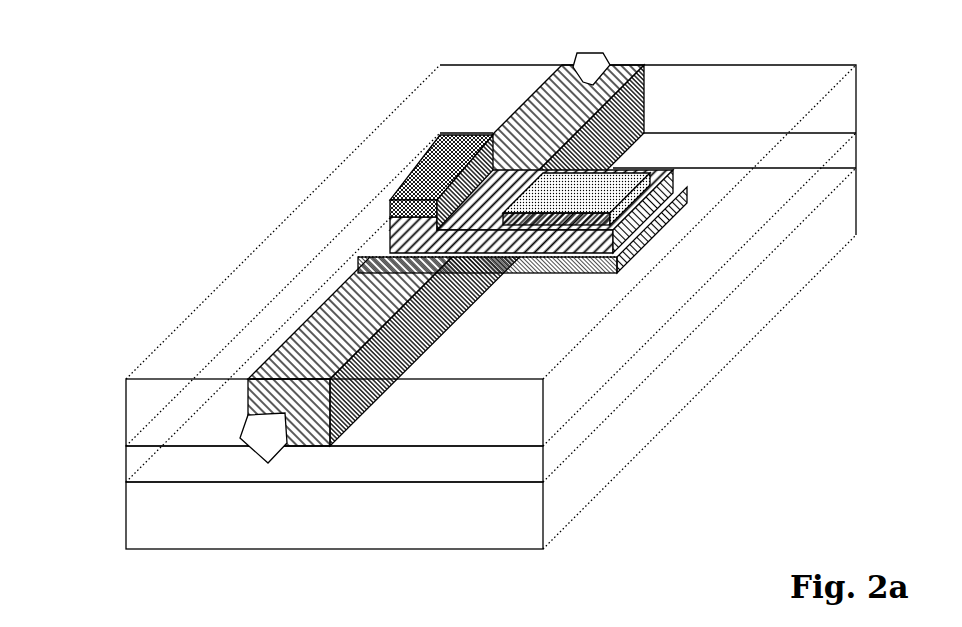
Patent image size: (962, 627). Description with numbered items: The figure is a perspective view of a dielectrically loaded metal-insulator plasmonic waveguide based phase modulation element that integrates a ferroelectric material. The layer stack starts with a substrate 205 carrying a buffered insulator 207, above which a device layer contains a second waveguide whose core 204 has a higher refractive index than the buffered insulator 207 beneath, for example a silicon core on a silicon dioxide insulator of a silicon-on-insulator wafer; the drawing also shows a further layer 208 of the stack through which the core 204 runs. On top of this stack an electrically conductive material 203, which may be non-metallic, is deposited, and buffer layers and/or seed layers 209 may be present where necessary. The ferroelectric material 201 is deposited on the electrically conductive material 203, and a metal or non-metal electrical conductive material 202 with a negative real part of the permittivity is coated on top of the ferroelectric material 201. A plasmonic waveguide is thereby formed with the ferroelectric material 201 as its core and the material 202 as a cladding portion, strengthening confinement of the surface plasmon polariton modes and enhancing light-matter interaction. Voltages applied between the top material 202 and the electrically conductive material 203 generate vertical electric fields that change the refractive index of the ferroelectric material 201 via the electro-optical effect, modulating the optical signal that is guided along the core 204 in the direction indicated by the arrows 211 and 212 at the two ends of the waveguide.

The ferroelectric material 201 is at (390, 222).
The electrical conductive material 202 is at (440, 163).
The electrically conductive material 203 is at (677, 180).
The core 204 is at (317, 312).
The substrate 205 is at (160, 532).
The buffered insulator 207 is at (160, 463).
The cladding layer 208 is at (160, 410).
The buffer layers and/or seed layers 209 is at (358, 268).
The input light arrow 211 is at (260, 437).
The output light arrow 212 is at (594, 67).